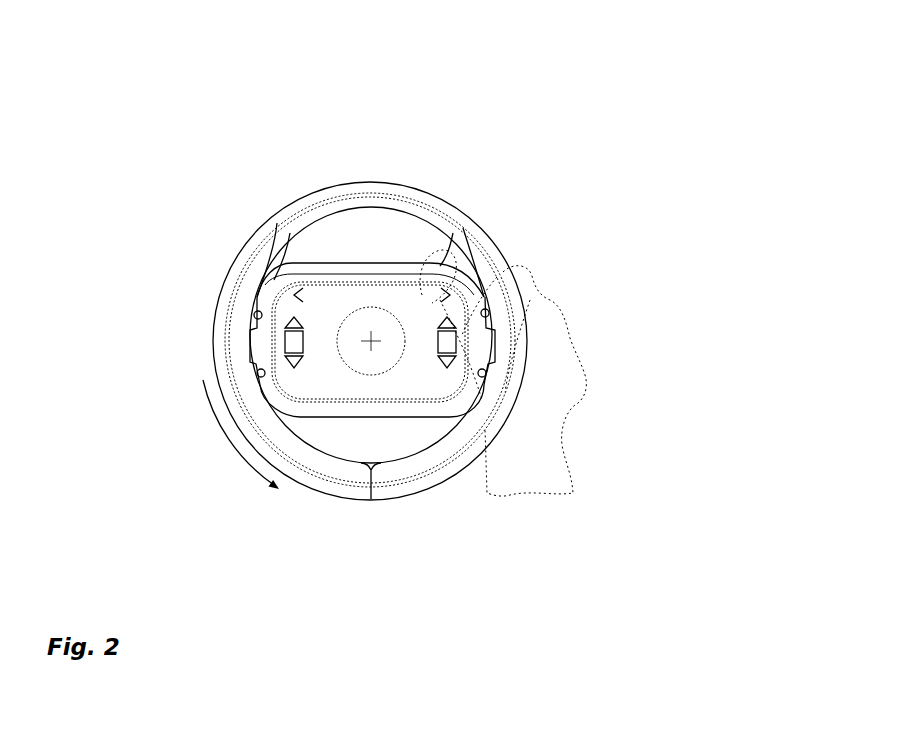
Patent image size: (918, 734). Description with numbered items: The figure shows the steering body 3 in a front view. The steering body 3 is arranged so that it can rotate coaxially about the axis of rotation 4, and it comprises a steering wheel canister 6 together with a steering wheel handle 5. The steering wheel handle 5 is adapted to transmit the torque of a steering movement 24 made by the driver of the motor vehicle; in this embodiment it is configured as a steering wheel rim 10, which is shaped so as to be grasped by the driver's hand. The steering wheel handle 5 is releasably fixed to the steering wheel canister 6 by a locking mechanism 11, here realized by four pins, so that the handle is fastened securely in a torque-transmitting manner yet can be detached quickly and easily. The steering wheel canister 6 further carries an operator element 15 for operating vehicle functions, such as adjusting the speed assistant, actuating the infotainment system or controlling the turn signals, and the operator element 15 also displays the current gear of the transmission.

The steering body 3 is at (803, 40).
The axis of rotation 4 is at (372, 345).
The steering wheel handle 5 is at (313, 292).
The steering wheel canister 6 is at (407, 263).
The steering wheel rim 10 is at (300, 203).
The locking mechanism 11 is at (482, 373).
The operator element 15 is at (322, 373).
The steering movement 24 is at (232, 450).